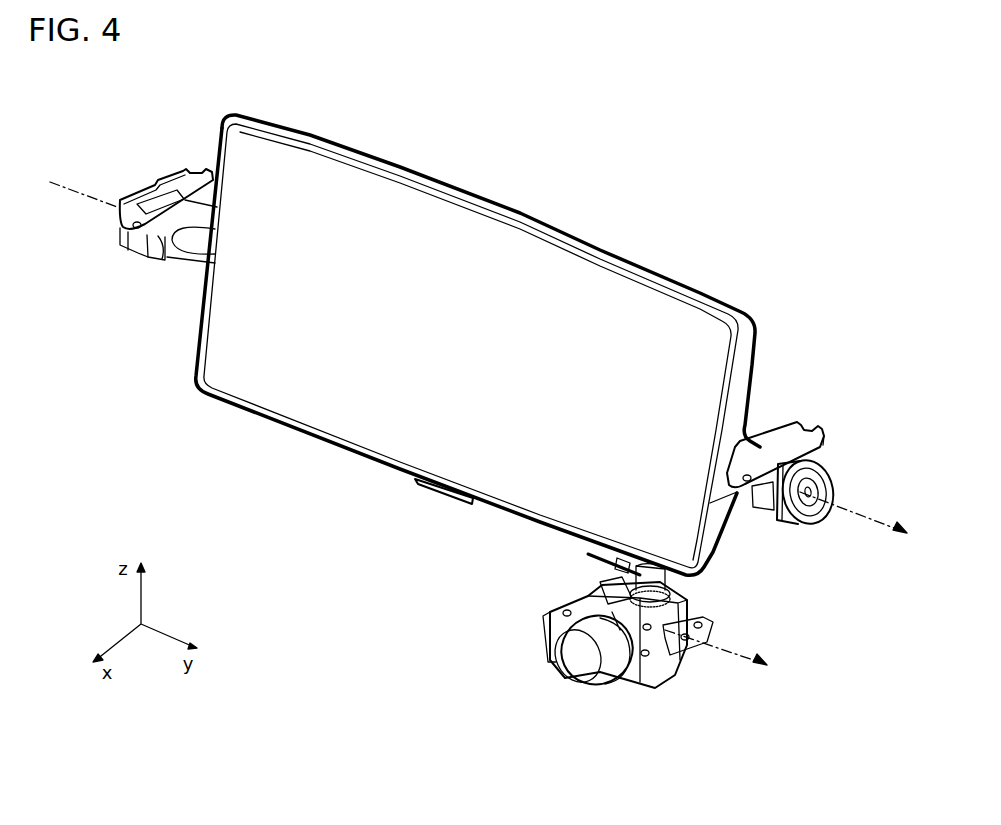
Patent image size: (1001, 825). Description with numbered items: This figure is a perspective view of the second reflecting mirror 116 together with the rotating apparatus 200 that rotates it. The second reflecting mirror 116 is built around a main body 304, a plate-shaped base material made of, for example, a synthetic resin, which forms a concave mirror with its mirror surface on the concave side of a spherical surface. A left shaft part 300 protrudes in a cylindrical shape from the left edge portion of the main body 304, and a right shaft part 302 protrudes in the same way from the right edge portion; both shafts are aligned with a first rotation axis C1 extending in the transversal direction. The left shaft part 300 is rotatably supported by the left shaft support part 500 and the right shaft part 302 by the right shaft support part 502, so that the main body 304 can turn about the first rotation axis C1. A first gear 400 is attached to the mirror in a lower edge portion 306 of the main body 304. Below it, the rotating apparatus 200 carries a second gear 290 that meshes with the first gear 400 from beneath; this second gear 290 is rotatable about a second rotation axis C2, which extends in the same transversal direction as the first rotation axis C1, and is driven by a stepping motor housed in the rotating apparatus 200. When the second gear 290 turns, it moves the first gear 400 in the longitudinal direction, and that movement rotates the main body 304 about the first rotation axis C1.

The second reflecting mirror 116 is at (705, 293).
The main body 304 is at (393, 164).
The lower edge portion 306 is at (493, 512).
The left shaft support part 500 is at (180, 170).
The left shaft part 300 is at (175, 262).
The right shaft support part 502 is at (800, 421).
The right shaft part 302 is at (740, 503).
The first rotation axis C1 is at (860, 515).
The rotating apparatus 200 is at (660, 685).
The second gear 290 is at (687, 599).
The first gear 400 is at (607, 577).
The second rotation axis C2 is at (730, 647).